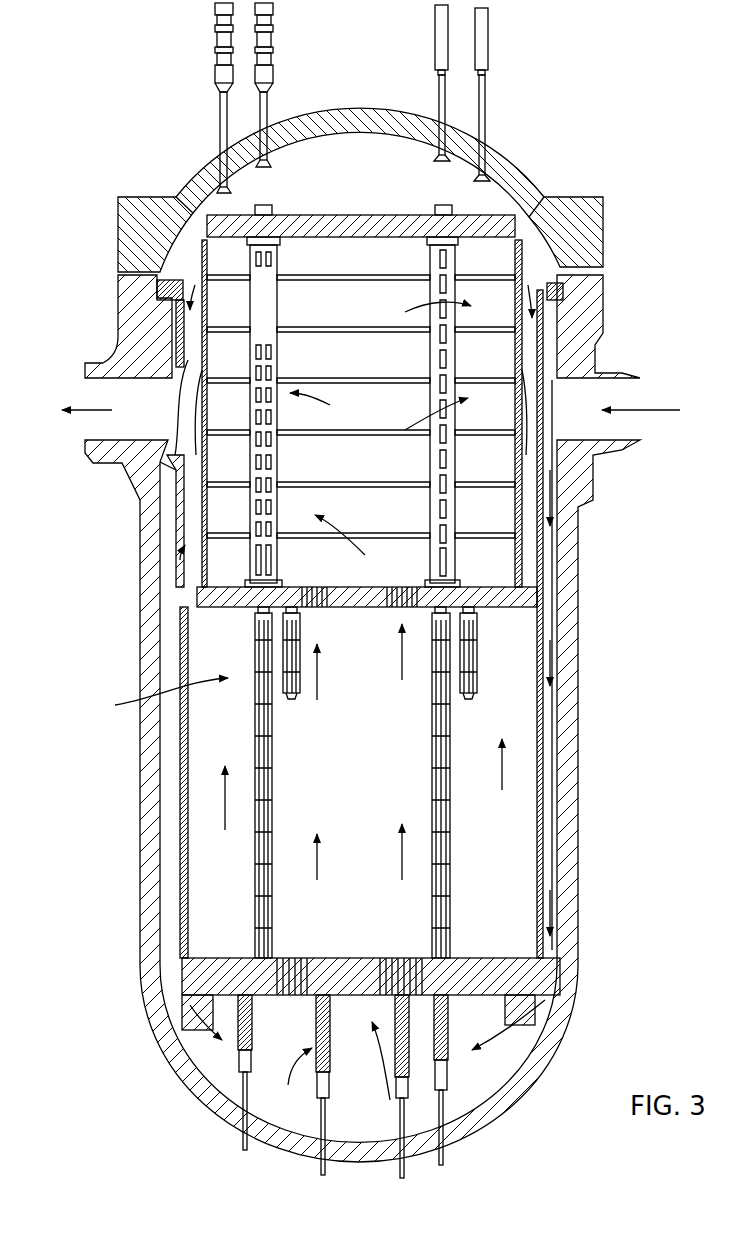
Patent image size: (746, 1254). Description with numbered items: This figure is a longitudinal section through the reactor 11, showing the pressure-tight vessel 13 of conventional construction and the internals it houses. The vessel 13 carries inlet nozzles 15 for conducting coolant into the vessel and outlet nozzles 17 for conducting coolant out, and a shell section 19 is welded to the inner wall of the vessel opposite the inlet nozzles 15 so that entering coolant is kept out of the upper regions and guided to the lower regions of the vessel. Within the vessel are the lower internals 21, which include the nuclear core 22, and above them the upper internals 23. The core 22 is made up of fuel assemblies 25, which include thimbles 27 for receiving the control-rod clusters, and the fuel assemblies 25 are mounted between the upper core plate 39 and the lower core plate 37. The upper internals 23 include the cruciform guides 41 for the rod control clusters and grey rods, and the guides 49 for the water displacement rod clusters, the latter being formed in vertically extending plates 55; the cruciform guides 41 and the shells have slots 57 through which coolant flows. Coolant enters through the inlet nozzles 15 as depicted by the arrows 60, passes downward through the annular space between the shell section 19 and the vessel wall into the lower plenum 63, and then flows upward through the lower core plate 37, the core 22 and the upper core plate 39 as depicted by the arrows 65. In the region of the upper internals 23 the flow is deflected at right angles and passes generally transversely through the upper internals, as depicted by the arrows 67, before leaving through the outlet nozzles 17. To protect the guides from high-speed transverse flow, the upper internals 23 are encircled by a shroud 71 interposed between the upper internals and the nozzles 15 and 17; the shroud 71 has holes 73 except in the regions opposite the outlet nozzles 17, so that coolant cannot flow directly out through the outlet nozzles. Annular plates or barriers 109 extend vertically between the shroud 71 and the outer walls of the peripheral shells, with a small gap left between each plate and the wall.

The reactor 11 is at (636, 684).
The pressure-tight vessel 13 is at (582, 764).
The inlet nozzle 15 is at (642, 440).
The outlet nozzle 17 is at (85, 432).
The shell section 19 is at (177, 558).
The lower internals 21 is at (222, 848).
The nuclear core 22 is at (113, 717).
The upper internals 23 is at (575, 300).
The fuel assembly 25 is at (432, 800).
The thimble 27 is at (255, 735).
The lower core plate 37 is at (180, 965).
The upper core plate 39 is at (540, 590).
The cruciform guide 41 is at (278, 338).
The WDRC guide 49 is at (457, 340).
The plate 55 is at (437, 490).
The slot 57 is at (552, 263).
The inlet coolant flow arrow 60 is at (640, 405).
The plenum 63 is at (375, 1108).
The upward coolant flow arrow 65 is at (400, 852).
The transverse coolant flow arrow 67 is at (393, 340).
The shroud 71 is at (202, 347).
The hole 73 is at (207, 506).
The annular plate 109 is at (205, 497).